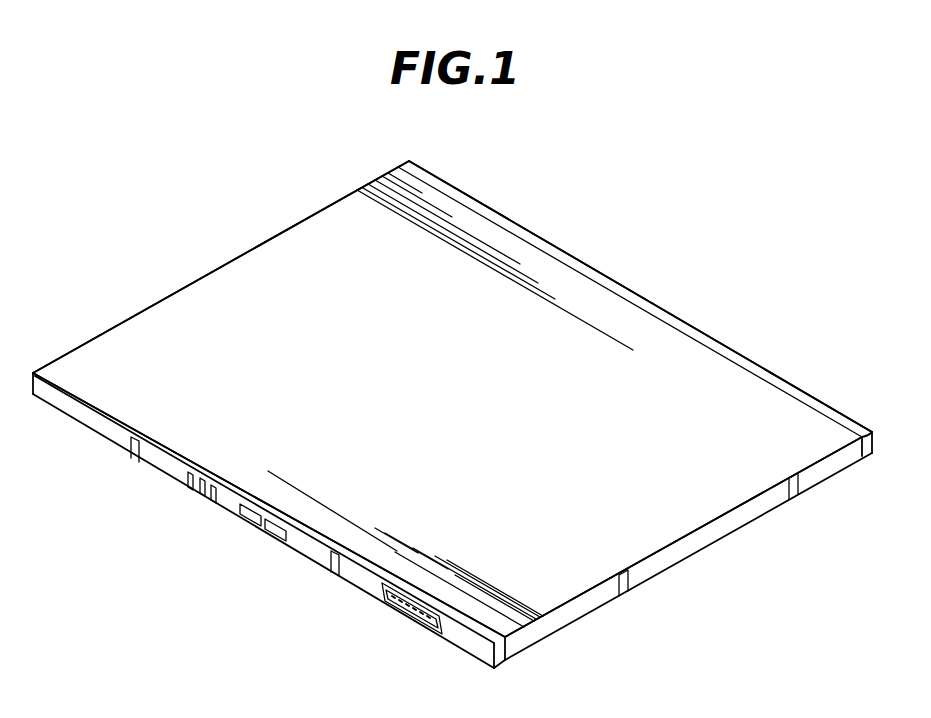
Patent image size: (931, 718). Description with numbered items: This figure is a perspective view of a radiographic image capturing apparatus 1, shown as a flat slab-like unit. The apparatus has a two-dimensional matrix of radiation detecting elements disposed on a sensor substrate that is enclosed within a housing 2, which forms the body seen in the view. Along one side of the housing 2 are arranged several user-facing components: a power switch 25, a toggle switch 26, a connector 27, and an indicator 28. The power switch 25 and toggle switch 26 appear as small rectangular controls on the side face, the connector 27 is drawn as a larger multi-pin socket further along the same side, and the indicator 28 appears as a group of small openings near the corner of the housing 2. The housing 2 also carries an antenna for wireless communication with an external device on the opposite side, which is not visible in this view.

The radiographic image capturing apparatus 1 is at (737, 318).
The housing 2 is at (333, 198).
The power switch 25 is at (244, 519).
The toggle switch 26 is at (278, 540).
The connector 27 is at (385, 606).
The indicator 28 is at (213, 501).